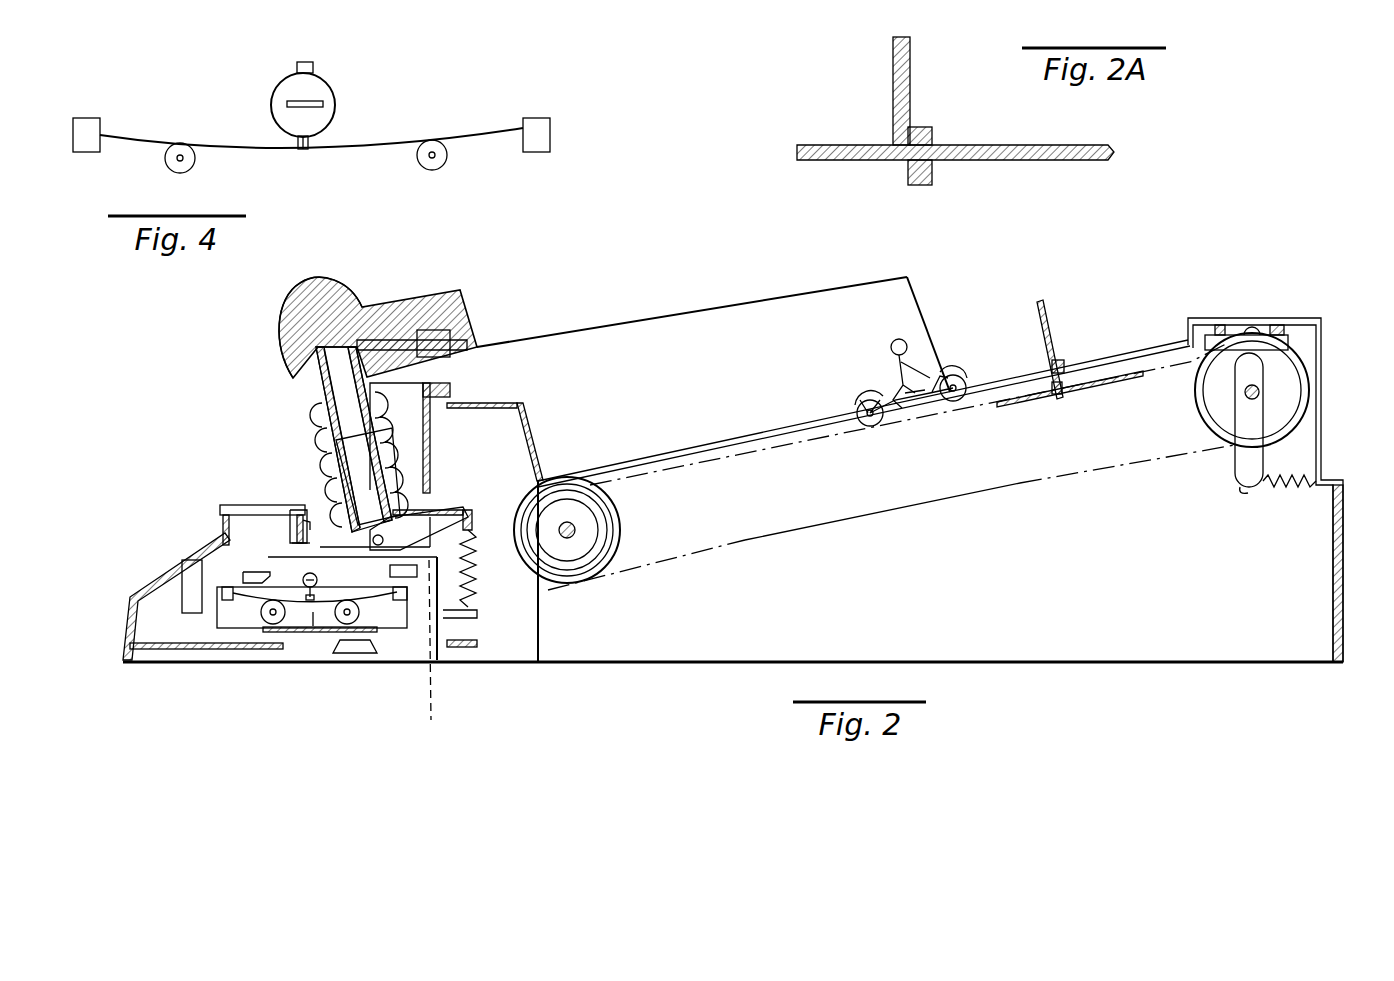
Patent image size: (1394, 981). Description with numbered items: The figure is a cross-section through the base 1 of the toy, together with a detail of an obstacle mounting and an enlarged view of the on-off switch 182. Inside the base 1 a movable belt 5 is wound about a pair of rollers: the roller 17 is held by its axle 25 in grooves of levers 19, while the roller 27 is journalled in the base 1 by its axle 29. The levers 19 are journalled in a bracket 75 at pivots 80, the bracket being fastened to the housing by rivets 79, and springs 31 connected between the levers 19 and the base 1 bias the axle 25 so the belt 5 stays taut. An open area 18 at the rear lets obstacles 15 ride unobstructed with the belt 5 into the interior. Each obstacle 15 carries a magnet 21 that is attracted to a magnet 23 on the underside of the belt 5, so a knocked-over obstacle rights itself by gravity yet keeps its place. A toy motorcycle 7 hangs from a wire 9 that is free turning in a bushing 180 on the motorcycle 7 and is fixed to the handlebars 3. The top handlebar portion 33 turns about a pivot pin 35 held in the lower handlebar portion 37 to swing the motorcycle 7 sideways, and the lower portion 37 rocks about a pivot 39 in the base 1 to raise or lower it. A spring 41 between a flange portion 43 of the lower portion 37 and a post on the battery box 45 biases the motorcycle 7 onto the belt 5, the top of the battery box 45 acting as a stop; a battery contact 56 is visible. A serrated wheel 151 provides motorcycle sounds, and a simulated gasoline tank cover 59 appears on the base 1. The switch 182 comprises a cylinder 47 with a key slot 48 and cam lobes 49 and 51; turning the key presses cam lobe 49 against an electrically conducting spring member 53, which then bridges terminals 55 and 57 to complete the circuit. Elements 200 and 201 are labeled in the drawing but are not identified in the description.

In FIG. 2, the base 1 is at (1344, 620).
In FIG. 2, the handlebars 3 is at (368, 305).
In FIG. 2, the movable belt 5 is at (960, 498).
In FIG. 2, the motorcycle 7 is at (920, 405).
In FIG. 2, the wire 9 is at (712, 309).
In FIG. 2A, the obstacle 15 is at (893, 96).
In FIG. 2, the obstacle 15 is at (1046, 330).
In FIG. 2, the roller 17 is at (1300, 365).
In FIG. 2, the open area 18 is at (1326, 410).
In FIG. 2, the levers 19 is at (1235, 465).
In FIG. 2A, the magnet 21 is at (921, 135).
In FIG. 2, the magnet 21 is at (1068, 368).
In FIG. 2A, the magnet 23 is at (922, 182).
In FIG. 2, the magnet 23 is at (1063, 395).
In FIG. 2, the axle 25 is at (1262, 392).
In FIG. 2, the roller 27 is at (615, 530).
In FIG. 2, the axle 29 is at (574, 537).
In FIG. 2, the springs 31 is at (1290, 482).
In FIG. 2, the top handlebar portion 33 is at (330, 287).
In FIG. 2, the pivot pin 35 is at (303, 418).
In FIG. 2, the lower handlebar portion 37 is at (400, 440).
In FIG. 2, the pivot 39 is at (416, 522).
In FIG. 2, the spring 41 is at (472, 565).
In FIG. 2, the flange portion 43 is at (438, 527).
In FIG. 2, the battery box 45 is at (448, 640).
In FIG. 4, the cylinder 47 is at (322, 88).
In FIG. 2, the cylinder 47 is at (318, 580).
In FIG. 4, the key slot 48 is at (292, 104).
In FIG. 4, the cam lobe 49 is at (314, 68).
In FIG. 4, the cam lobe 51 is at (296, 147).
In FIG. 4, the electrically conducting spring member 53 is at (385, 143).
In FIG. 2, the electrically conducting spring member 53 is at (235, 598).
In FIG. 4, the terminal 55 is at (176, 168).
In FIG. 2, the terminal 55 is at (273, 625).
In FIG. 2, the battery contact 56 is at (361, 652).
In FIG. 4, the terminal 57 is at (438, 166).
In FIG. 2, the terminal 57 is at (355, 623).
In FIG. 2, the simulated gasoline tank cover 59 is at (250, 505).
In FIG. 2, the bracket 75 is at (1268, 335).
In FIG. 2, the rivets 79 is at (1218, 328).
In FIG. 2, the pivots 80 is at (1250, 327).
In FIG. 2, the serrated wheel 151 is at (610, 513).
In FIG. 2, the bushing 180 is at (938, 352).
In FIG. 4, the on-off switch 182 is at (311, 150).
In FIG. 2, the on-off switch 182 is at (283, 570).
In FIG. 4, the right weight 200 is at (536, 118).
In FIG. 2, the right weight 200 is at (400, 602).
In FIG. 4, the left weight 201 is at (90, 118).
In FIG. 2, the left weight 201 is at (228, 585).